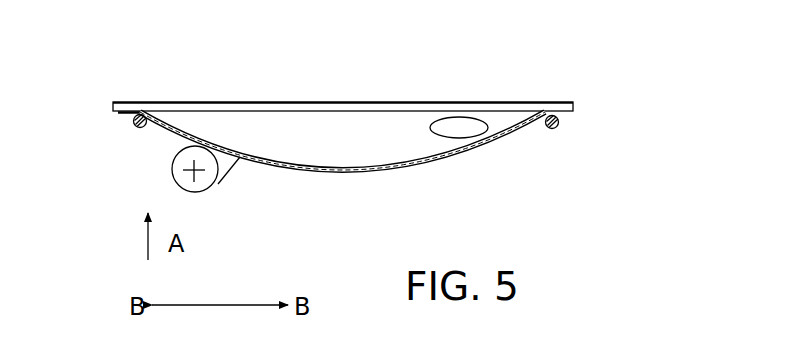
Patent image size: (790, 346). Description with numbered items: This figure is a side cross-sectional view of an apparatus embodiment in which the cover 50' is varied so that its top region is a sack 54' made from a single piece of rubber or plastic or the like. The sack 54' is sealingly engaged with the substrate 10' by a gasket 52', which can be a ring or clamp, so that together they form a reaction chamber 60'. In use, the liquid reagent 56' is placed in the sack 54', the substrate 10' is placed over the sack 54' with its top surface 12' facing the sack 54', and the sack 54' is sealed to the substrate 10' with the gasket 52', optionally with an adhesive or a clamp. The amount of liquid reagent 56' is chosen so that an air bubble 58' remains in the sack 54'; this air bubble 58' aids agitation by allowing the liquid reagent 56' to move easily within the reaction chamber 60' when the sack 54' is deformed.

The substrate 10' is at (343, 90).
The top surface 12' is at (94, 128).
The cover 50' is at (236, 178).
The gasket 52' is at (358, 149).
The sack 54' is at (342, 161).
The liquid reagent 56' is at (410, 168).
The air bubble 58' is at (475, 147).
The reaction chamber 60' is at (400, 92).